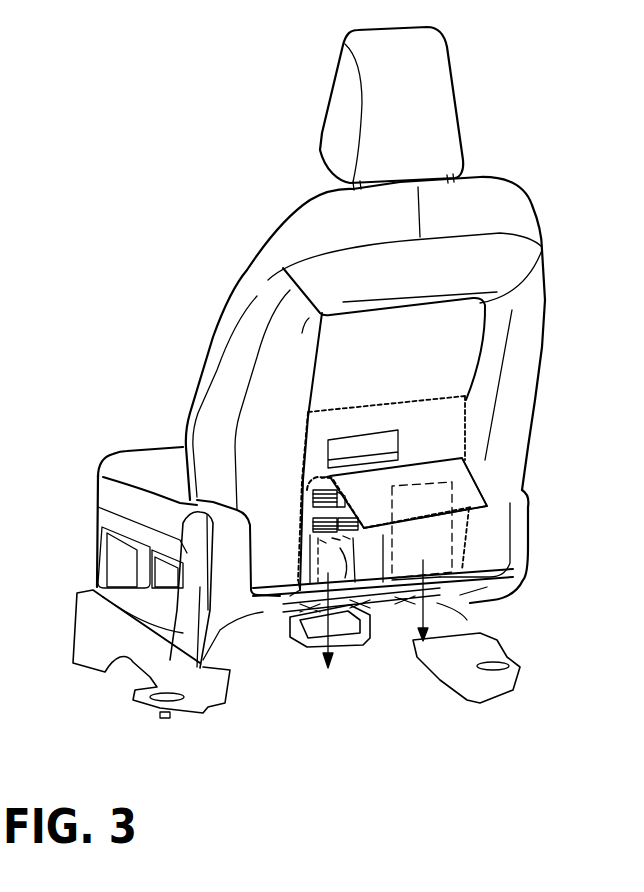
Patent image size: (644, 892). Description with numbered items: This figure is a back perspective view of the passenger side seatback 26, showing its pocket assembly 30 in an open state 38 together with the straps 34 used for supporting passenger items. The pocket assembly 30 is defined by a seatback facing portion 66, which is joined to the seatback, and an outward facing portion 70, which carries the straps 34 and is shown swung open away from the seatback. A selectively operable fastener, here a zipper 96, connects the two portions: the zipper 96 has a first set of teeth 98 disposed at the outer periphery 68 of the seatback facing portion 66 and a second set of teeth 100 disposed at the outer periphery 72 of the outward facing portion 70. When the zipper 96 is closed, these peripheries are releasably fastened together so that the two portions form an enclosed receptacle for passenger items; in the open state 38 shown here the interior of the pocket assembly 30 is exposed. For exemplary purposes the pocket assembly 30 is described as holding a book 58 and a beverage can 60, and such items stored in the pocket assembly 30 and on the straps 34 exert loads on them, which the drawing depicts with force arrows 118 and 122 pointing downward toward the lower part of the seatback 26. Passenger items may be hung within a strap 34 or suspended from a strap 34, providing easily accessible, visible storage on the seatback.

The passenger side seatback 26 is at (490, 200).
The pocket assembly 30 is at (323, 403).
The straps 34 is at (300, 490).
The open state 38 is at (485, 380).
The book 58 is at (500, 507).
The beverage can 60 is at (376, 622).
The seatback facing portion 66 is at (438, 428).
The outer periphery of the seatback facing portion 68 is at (465, 455).
The outward facing portion 70 is at (475, 480).
The outer periphery of the outward facing portion 72 is at (470, 493).
The zipper 96 is at (297, 562).
The first set of teeth 98 is at (421, 397).
The second set of teeth 100 is at (428, 518).
The force arrow 118 is at (319, 597).
The force arrow 122 is at (393, 603).